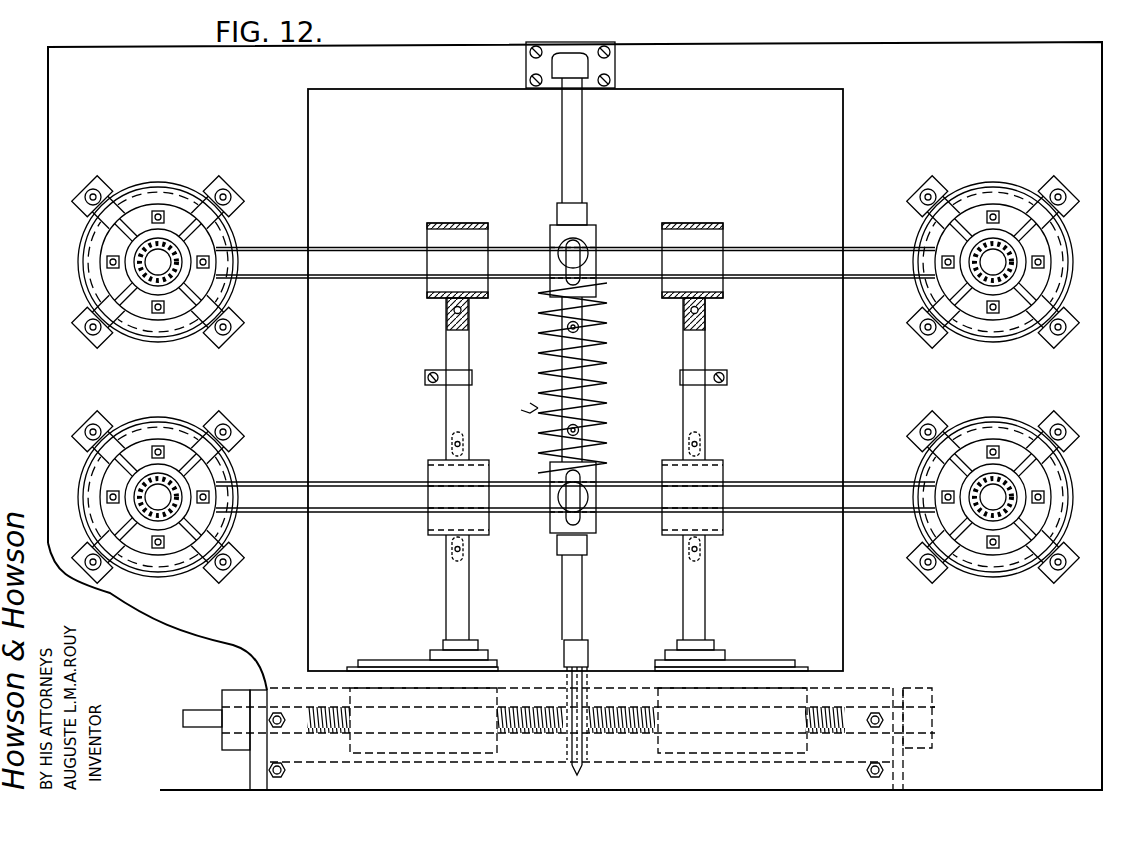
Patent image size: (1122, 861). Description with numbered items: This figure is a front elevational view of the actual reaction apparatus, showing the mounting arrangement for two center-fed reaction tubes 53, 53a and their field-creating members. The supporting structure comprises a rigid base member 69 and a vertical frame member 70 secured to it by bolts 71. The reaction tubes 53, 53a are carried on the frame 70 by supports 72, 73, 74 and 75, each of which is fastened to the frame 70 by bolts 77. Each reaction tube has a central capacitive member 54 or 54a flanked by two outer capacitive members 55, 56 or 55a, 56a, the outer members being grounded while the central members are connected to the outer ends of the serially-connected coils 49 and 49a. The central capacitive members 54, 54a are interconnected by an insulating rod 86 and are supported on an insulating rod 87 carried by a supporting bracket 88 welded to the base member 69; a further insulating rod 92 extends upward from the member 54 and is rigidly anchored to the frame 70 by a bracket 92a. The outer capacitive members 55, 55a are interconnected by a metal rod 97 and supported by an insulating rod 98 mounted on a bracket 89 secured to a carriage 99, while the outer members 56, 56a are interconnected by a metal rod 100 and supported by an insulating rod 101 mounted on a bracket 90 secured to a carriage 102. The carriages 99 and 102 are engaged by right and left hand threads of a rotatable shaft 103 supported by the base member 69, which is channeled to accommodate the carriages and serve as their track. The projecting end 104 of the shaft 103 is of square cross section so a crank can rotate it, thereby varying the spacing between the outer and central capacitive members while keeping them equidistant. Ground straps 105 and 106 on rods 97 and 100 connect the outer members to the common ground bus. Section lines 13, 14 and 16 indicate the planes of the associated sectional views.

The section line 13- 13 is at (630, 238).
The section line 14- 14 is at (790, 475).
The section line 16- 16 is at (180, 150).
The coil 49 is at (607, 328).
The coil 49a is at (512, 409).
The reaction tube 53 is at (790, 245).
The reaction tube 53a is at (870, 480).
The central capacitive member 54 is at (590, 225).
The central capacitive member 54a is at (597, 525).
The outer capacitive member 55 is at (455, 222).
The outer capacitive member 55a is at (440, 458).
The outer capacitive member 56 is at (690, 222).
The outer capacitive member 56a is at (715, 458).
The base member 69 is at (515, 683).
The vertical frame member 70 is at (1083, 100).
The bolts 71 is at (268, 770).
The support 72 is at (222, 228).
The support 73 is at (1055, 220).
The support 74 is at (222, 455).
The support 75 is at (993, 417).
The bolts 77 is at (225, 195).
The insulating rod or tube 86 is at (583, 378).
The insulating rod or tube 87 is at (583, 572).
The supporting bracket 88 is at (589, 660).
The bracket 89 is at (390, 659).
The bracket 90 is at (752, 659).
The insulating rod or tube 92 is at (583, 128).
The bracket 92a is at (553, 80).
The metal tube or rod 97 is at (445, 350).
The insulating rod or tube 98 is at (445, 594).
The carriage 99 is at (345, 695).
The metal tube or rod 100 is at (706, 350).
The insulating rod or tube 101 is at (706, 584).
The carriage 102 is at (805, 696).
The rotatable shaft 103 is at (562, 737).
The projecting end 104 is at (200, 728).
The ground strap 105 is at (473, 377).
The ground strap 106 is at (679, 377).